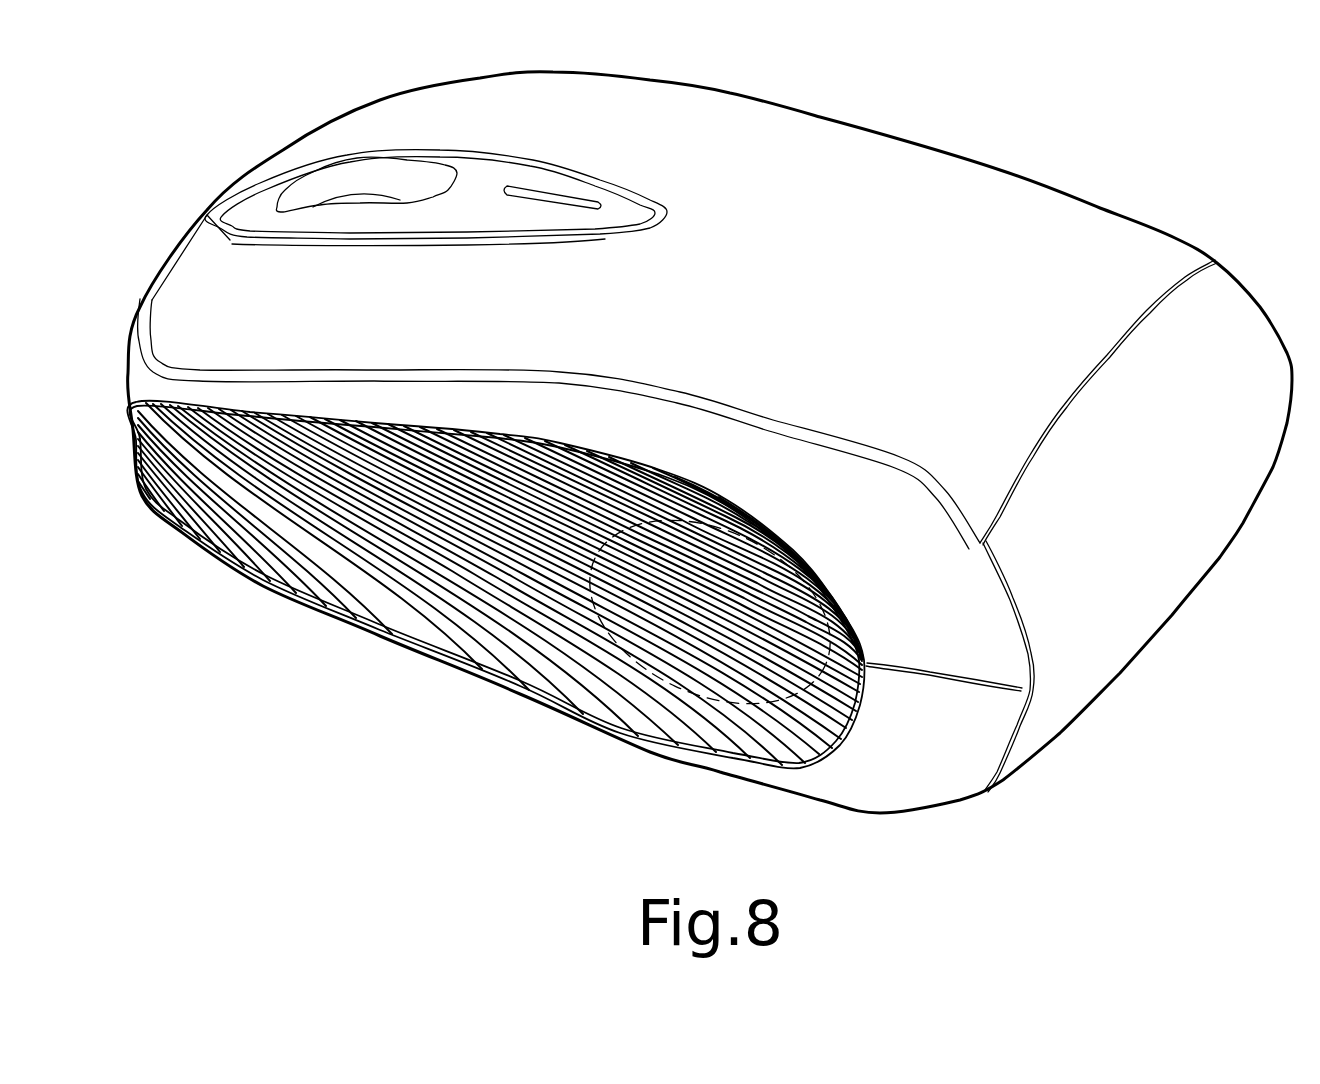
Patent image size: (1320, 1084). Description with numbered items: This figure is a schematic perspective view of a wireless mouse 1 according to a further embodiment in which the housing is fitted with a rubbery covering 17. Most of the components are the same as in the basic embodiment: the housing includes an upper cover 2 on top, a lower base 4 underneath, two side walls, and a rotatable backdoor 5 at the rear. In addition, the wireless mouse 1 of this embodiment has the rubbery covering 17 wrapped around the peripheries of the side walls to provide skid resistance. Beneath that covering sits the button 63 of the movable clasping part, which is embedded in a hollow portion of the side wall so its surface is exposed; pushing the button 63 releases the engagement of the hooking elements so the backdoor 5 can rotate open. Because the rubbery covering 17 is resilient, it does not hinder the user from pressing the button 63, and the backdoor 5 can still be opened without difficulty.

The wireless mouse 1 is at (1180, 138).
The upper cover 2 is at (905, 178).
The lower base 4 is at (907, 777).
The rotatable backdoor 5 is at (1172, 540).
The rubbery covering 17 is at (310, 567).
The button 63 is at (707, 690).